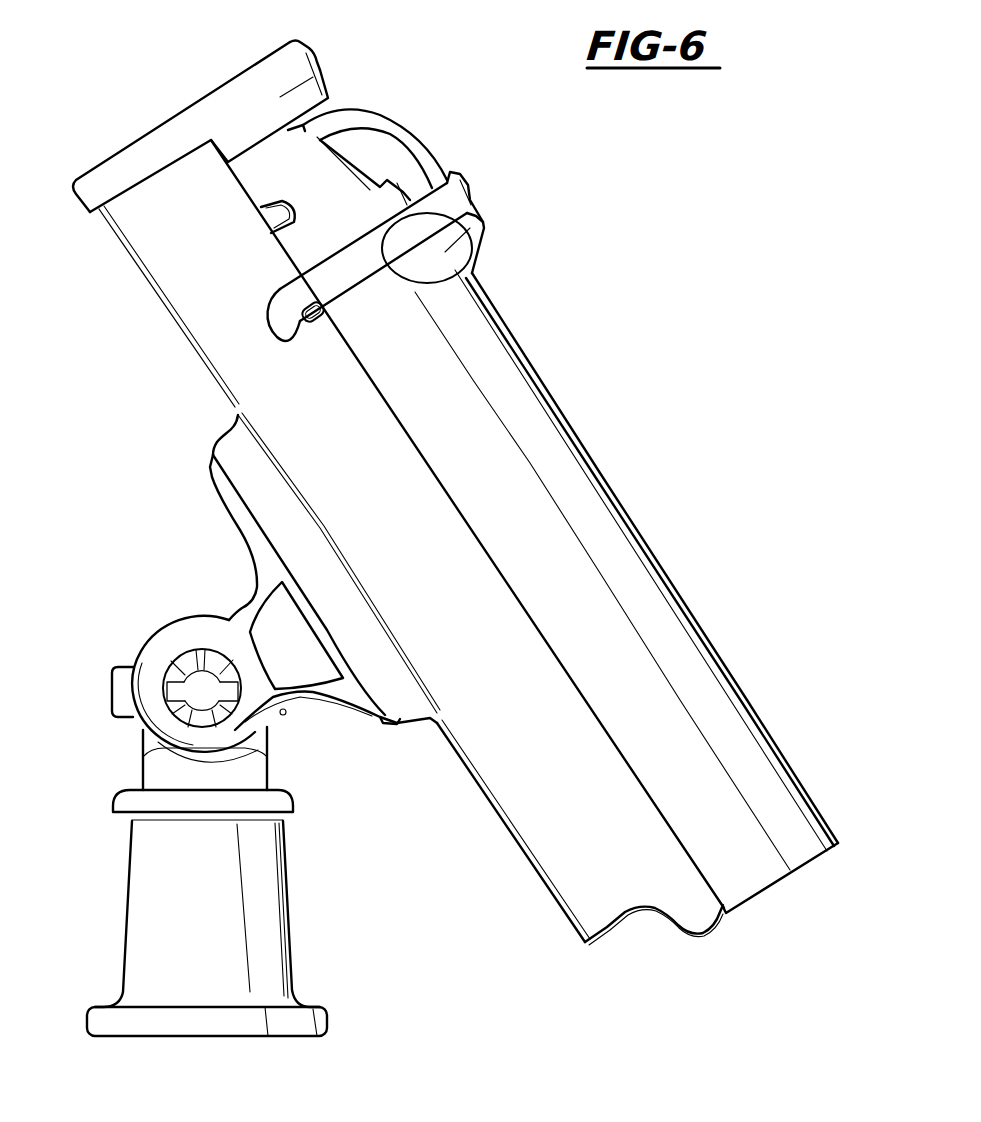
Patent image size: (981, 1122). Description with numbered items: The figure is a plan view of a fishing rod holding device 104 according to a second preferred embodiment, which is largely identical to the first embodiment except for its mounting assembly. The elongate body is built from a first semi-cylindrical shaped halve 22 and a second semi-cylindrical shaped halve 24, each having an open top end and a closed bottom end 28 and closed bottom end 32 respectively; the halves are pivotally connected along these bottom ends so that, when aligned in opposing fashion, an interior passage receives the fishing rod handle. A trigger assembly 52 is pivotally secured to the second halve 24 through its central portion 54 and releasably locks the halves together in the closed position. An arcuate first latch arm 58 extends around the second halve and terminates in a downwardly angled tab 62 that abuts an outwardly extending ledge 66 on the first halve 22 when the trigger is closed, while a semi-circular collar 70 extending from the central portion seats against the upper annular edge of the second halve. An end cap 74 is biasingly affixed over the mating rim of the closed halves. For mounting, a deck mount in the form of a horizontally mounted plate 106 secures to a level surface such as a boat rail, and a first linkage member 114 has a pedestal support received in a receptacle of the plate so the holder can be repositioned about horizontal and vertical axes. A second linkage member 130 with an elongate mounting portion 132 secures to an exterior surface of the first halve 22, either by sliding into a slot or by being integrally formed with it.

The first semi-cylindrical shaped halve 22 is at (170, 288).
The second semi-cylindrical shaped halve 24 is at (538, 410).
The closed bottom end 28 is at (603, 927).
The closed bottom end 32 is at (767, 883).
The trigger assembly 52 is at (418, 129).
The central portion 54 is at (440, 160).
The first latch arm 58 is at (435, 278).
The downwardly angled tab 62 is at (273, 317).
The first outwardly extending ledge 66 is at (318, 330).
The annular and semi-circular shaped collar 70 is at (320, 76).
The end cap 74 is at (148, 140).
The holding device 104 is at (130, 507).
The horizontally mounted plate 106 is at (100, 889).
The first linkage member 114 is at (115, 765).
The second linkage member 130 is at (232, 592).
The elongate mounting portion 132 is at (390, 717).